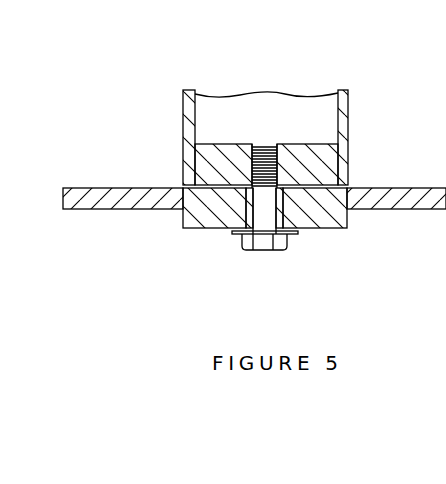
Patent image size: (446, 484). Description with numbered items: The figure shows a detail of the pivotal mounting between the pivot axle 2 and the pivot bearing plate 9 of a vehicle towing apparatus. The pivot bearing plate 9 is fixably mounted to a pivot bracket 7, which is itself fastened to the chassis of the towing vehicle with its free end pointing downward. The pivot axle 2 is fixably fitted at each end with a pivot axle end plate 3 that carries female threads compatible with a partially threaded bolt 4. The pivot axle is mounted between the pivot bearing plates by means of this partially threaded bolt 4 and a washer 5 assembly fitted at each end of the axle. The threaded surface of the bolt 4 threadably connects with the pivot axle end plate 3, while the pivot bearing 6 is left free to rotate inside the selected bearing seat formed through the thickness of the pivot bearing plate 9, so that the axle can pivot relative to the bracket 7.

The pivot axle 2 is at (348, 110).
The pivot axle end plate 3 is at (318, 143).
The partially threaded bolt 4 is at (265, 252).
The washer 5 is at (235, 235).
The pivot bearing 6 is at (288, 213).
The pivot bracket 7 is at (407, 212).
The pivot bearing plate 9 is at (197, 228).